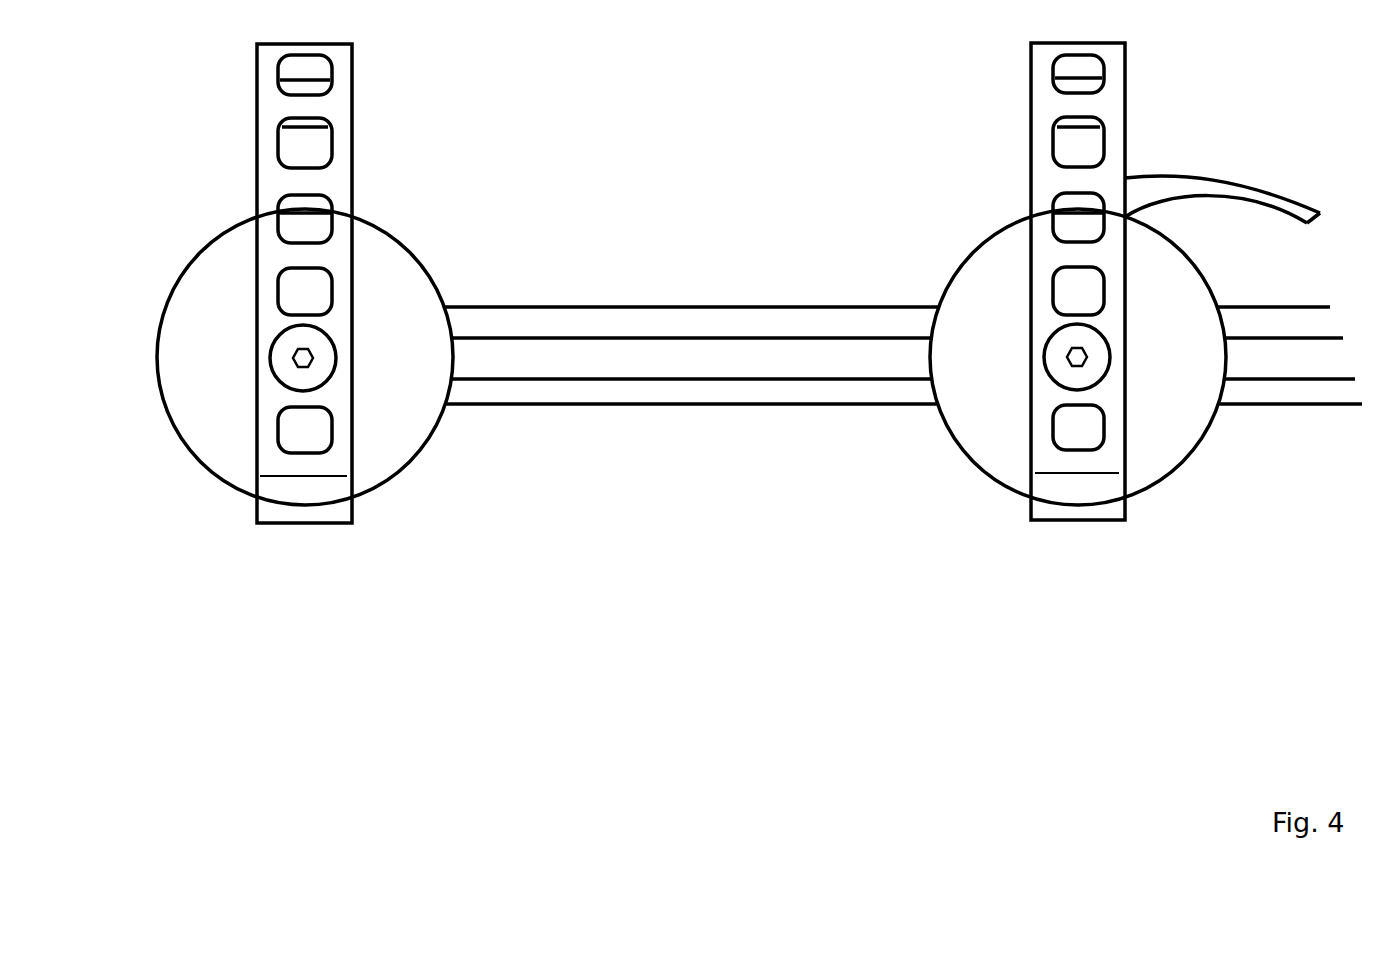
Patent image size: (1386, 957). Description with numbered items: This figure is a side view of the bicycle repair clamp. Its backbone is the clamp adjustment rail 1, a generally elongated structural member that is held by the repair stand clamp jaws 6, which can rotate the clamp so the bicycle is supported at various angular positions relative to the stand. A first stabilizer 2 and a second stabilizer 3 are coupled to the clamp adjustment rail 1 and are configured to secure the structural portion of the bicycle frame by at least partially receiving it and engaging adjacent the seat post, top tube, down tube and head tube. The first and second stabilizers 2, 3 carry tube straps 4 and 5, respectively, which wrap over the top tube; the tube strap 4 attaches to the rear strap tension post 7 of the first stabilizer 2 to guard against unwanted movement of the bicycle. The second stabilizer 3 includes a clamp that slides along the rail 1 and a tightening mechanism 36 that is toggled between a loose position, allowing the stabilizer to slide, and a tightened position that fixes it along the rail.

The clamp adjustment rail 1 is at (736, 367).
The first stabilizer 2 is at (385, 415).
The second stabilizer 3 is at (1002, 413).
The tube strap 4 is at (328, 105).
The tube strap 5 is at (1053, 103).
The clamp jaws 6 is at (285, 367).
The rear strap tension post 7 is at (1092, 365).
The tightening mechanism 36 is at (1143, 190).